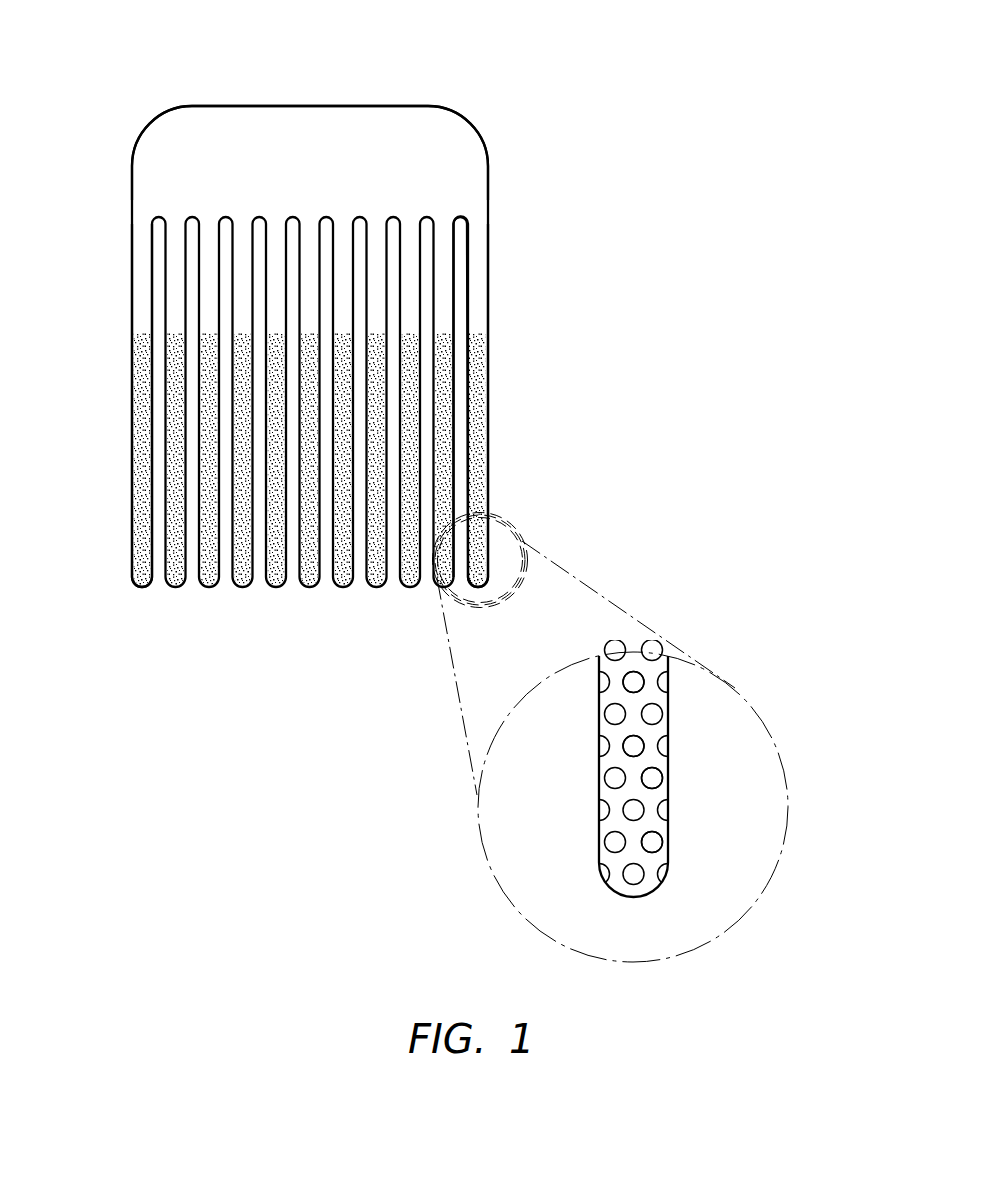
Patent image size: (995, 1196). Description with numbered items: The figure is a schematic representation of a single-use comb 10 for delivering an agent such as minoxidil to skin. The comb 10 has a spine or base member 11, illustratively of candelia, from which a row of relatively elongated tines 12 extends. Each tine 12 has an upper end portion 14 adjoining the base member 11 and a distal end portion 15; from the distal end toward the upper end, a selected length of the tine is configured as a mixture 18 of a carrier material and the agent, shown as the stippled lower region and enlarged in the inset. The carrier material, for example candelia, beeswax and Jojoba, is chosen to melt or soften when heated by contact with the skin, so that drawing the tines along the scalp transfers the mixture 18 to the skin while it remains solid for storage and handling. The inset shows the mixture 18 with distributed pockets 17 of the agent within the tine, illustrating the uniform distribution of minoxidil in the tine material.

The comb 10 is at (553, 94).
The handle body 11 is at (443, 151).
The teeth 12 is at (489, 273).
The upper tooth portion 14 is at (119, 273).
The lower tooth portion 15 is at (119, 467).
The apertures 17 is at (633, 682).
The abrasive coating 18 is at (489, 413).